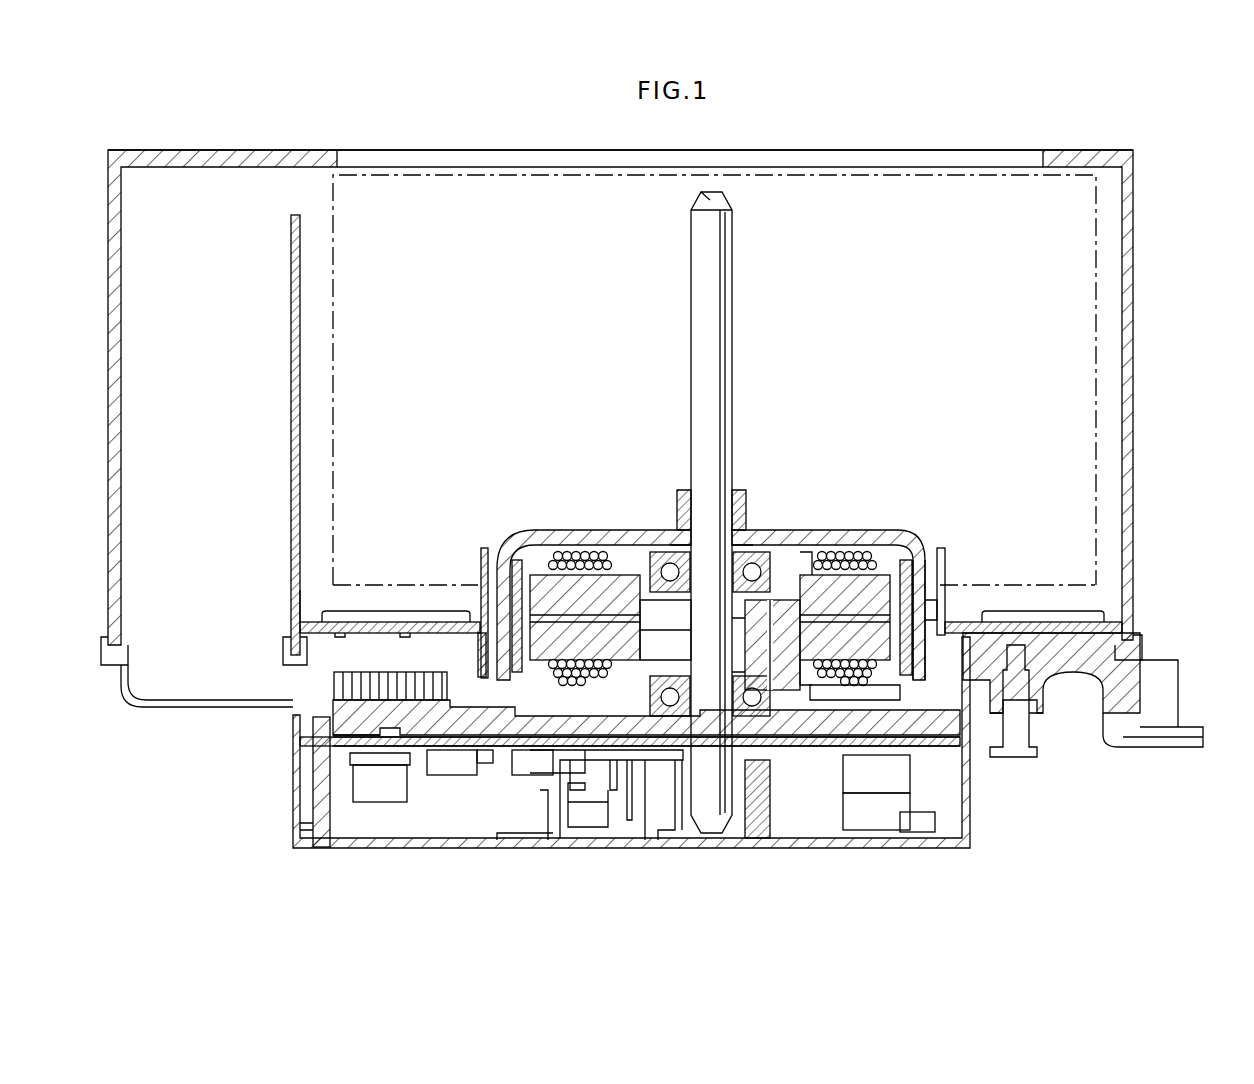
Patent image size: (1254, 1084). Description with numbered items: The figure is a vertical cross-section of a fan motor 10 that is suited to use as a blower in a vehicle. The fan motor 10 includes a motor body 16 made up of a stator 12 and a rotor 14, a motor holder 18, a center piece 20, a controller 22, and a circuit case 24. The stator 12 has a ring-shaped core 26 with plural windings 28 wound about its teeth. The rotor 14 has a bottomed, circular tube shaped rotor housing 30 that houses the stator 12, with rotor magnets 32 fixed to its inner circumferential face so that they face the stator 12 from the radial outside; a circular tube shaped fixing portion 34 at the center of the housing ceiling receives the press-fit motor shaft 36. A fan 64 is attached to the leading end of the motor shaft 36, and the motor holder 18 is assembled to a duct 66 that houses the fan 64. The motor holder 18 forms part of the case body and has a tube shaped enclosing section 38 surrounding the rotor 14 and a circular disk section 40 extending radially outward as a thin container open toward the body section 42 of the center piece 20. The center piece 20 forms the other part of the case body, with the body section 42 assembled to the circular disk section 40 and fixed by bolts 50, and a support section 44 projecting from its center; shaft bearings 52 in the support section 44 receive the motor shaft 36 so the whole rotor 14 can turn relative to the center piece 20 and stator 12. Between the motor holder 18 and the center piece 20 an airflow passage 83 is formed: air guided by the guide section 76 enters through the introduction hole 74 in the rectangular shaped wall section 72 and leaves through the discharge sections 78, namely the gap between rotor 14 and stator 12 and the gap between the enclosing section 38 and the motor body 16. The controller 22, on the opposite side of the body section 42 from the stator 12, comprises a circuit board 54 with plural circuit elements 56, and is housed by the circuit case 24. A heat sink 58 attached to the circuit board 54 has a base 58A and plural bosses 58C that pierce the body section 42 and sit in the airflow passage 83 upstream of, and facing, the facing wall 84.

The fan motor 10 is at (1162, 176).
The stator 12 is at (918, 556).
The rotor 14 is at (922, 545).
The motor body 16 is at (760, 547).
The motor holder 18 is at (960, 608).
The center piece 20 is at (588, 750).
The controller 22 is at (815, 752).
The circuit case 24 is at (905, 848).
The core 26 is at (800, 585).
The windings 28 is at (858, 550).
The rotor housing 30 is at (608, 530).
The rotor magnets 32 is at (942, 552).
The fixing portion 34 is at (684, 515).
The motor shaft 36 is at (734, 290).
The enclosing section 38 is at (484, 556).
The circular disk section 40 is at (386, 611).
The body section 42 is at (560, 748).
The support section 44 is at (643, 712).
The bolts 50 is at (1013, 760).
The shaft bearings 52 is at (763, 556).
The circuit board 54 is at (500, 775).
The circuit elements 56 is at (452, 802).
The heat sink 58 is at (577, 651).
The base 58A is at (417, 740).
The bosses 58C is at (358, 700).
The fan 64 is at (337, 193).
The duct 66 is at (222, 148).
The rectangular shaped wall section 72 is at (992, 680).
The introduction hole 74 is at (298, 667).
The guide section 76 is at (160, 708).
The discharge sections 78 is at (550, 545).
The airflow passage 83 is at (438, 664).
The facing wall 84 is at (480, 657).